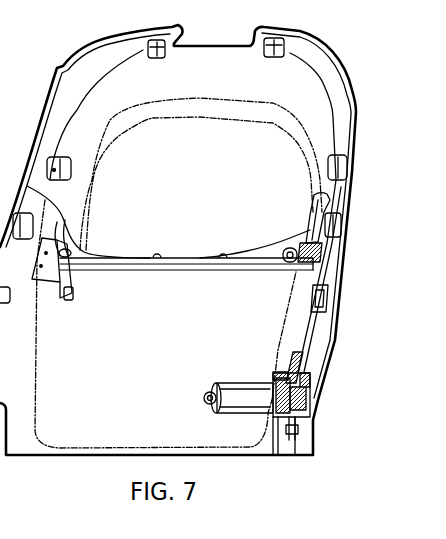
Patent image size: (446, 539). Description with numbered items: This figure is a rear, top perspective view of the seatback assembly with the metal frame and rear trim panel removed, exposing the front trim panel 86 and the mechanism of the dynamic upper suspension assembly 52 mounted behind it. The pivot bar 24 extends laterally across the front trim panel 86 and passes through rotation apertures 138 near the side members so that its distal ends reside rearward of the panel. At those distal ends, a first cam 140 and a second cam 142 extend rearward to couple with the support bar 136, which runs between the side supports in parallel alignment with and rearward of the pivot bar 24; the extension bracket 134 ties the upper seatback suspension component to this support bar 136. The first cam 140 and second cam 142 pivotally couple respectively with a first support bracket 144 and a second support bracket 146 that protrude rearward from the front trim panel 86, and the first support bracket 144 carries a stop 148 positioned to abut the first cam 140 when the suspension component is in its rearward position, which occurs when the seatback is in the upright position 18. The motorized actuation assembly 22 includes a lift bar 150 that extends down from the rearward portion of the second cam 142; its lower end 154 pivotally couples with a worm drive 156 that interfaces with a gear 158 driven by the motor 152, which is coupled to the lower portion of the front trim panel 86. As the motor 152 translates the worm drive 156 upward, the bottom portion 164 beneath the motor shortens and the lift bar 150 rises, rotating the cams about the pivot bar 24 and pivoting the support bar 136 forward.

The motorized actuation assembly 22 is at (284, 316).
The pivot bar 24 is at (320, 256).
The front trim panel 86 is at (142, 381).
The extension bracket 134 is at (173, 266).
The support bar 136 is at (138, 266).
The rotation apertures 138 is at (72, 252).
The first cam 140 is at (77, 256).
The second cam 142 is at (317, 243).
The first support bracket 144 is at (50, 277).
The second support bracket 146 is at (306, 240).
The stop 148 is at (73, 300).
The lift bar 150 is at (309, 318).
The motor 152 is at (227, 384).
The lower end 154 is at (302, 355).
The worm drive 156 is at (309, 384).
The gear 158 is at (271, 445).
The bottom portion 164 is at (298, 423).
The dynamic upper suspension assembly 52 is at (173, 170).
The upright position 18 is at (3, 150).